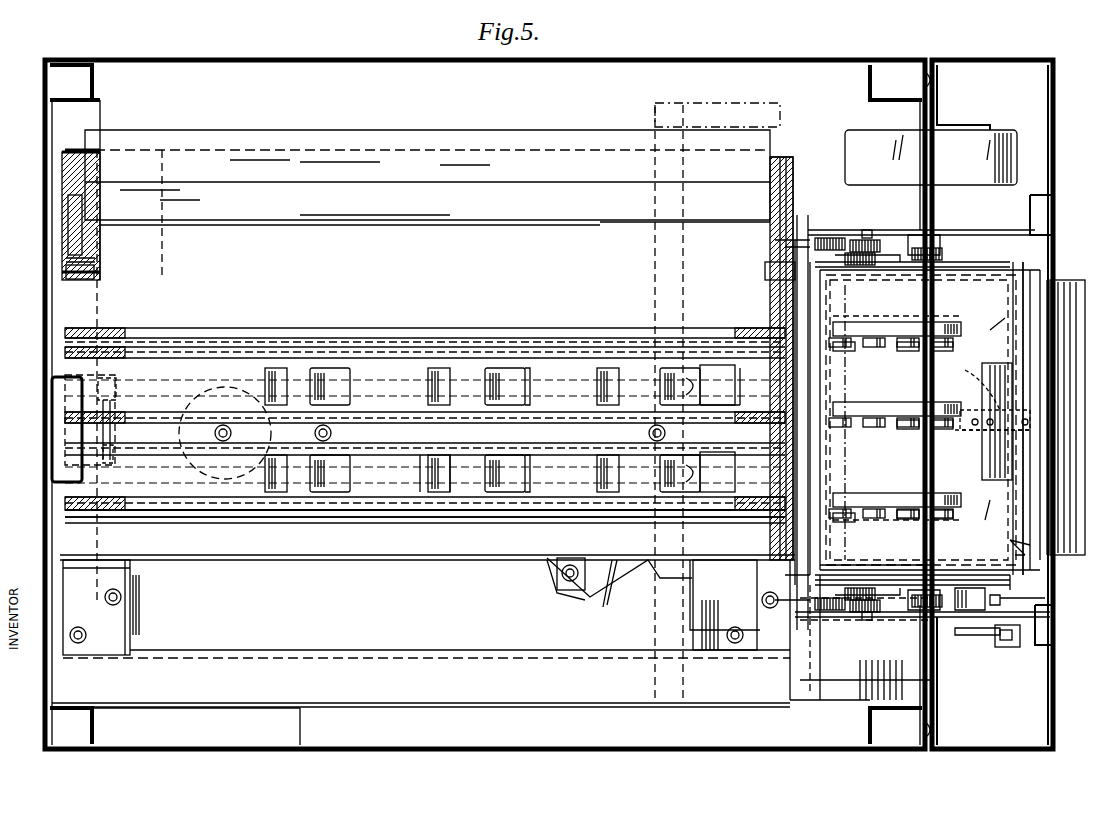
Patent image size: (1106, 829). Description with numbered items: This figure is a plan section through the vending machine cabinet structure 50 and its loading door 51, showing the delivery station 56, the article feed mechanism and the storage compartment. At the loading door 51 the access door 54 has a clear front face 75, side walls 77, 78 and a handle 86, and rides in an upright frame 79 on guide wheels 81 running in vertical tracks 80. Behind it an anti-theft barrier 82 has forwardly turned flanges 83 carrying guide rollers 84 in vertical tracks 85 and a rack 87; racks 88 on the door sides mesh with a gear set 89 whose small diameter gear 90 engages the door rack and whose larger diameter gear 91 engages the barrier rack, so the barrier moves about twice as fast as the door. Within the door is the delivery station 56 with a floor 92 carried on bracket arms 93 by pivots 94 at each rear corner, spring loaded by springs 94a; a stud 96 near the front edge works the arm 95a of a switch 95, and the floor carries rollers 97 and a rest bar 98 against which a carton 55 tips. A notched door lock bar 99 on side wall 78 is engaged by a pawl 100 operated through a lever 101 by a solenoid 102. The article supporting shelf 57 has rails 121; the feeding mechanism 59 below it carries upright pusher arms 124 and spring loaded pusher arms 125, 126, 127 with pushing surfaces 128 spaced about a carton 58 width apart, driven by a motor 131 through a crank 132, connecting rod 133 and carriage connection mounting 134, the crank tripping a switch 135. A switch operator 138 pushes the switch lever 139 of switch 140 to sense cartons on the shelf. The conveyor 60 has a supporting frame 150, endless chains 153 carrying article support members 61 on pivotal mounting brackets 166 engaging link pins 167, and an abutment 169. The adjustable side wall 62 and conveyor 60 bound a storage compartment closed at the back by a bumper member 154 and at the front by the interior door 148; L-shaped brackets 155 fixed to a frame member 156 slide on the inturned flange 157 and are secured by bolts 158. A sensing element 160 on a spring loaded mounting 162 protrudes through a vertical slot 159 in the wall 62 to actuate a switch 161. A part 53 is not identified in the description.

The cabinet structure 50 is at (697, 60).
The loading door 51 is at (1005, 65).
The bracket 53 is at (765, 272).
The access door 54 is at (1050, 268).
The carton 55 is at (840, 360).
The delivery station 56 is at (1040, 560).
The article supporting shelf 57 is at (361, 526).
The carton 58 is at (605, 530).
The feeding mechanism 59 is at (552, 517).
The conveyor 60 is at (381, 283).
The article support members 61 is at (300, 285).
The adjustable side wall 62 is at (383, 562).
The front face 75 is at (1030, 350).
The side wall 77 is at (965, 262).
The side wall 78 is at (958, 560).
The upright frame 79 is at (1003, 230).
The vertical tracks 80 is at (945, 236).
The guide wheels 81 is at (912, 560).
The anti-theft barrier 82 is at (820, 392).
The forwardly turned flanges 83 is at (785, 253).
The guide rollers 84 is at (820, 236).
The vertical tracks 85 is at (775, 236).
The handle 86 is at (1055, 290).
The rack 87 is at (852, 262).
The racks 88 is at (880, 248).
The gear set 89 is at (869, 222).
The small diameter gear 90 is at (855, 238).
The larger diameter gear 91 is at (940, 255).
The floor 92 is at (919, 420).
The bracket arms 93 is at (990, 419).
The pivots 94 is at (850, 316).
The springs 94a is at (850, 500).
The switch 95 is at (965, 432).
The arm 95a is at (979, 384).
The stud 96 is at (1015, 432).
The rollers 97 is at (925, 340).
The rest bar 98 is at (982, 388).
The notched door lock bar 99 is at (1045, 592).
The pawl 100 is at (1050, 603).
The lever 101 is at (982, 637).
The solenoid 102 is at (1000, 650).
The rails 121 is at (160, 325).
The upright pusher arms 124 is at (263, 379).
The spring loaded pusher arms 125 is at (312, 395).
The pusher arms 126 is at (485, 393).
The pusher arms 127 is at (658, 378).
The pushing surface 128 is at (432, 368).
The motor 131 is at (202, 396).
The crank 132 is at (245, 450).
The connecting rod 133 is at (442, 522).
The carriage connection mounting 134 is at (590, 436).
The switch 135 is at (118, 395).
The spring loaded switch operator 138 is at (717, 428).
The switch lever 139 is at (748, 386).
The switch 140 is at (720, 395).
The interior door 148 is at (810, 690).
The supporting frame 150 is at (60, 168).
The endless chains 153 is at (62, 272).
The bumper member 154 is at (85, 472).
The L-shaped bracket 155 is at (130, 616).
The frame member 156 is at (228, 712).
The inturned flange 157 is at (315, 665).
The bolts 158 is at (122, 595).
The vertical slot 159 is at (612, 590).
The spring loaded sensing element 160 is at (615, 572).
The switch 161 is at (700, 600).
The spring loaded mounting 162 is at (557, 578).
The pivotal mounting bracket 166 is at (95, 263).
The article support member mounting means 167 is at (95, 271).
The abutment 169 is at (85, 258).